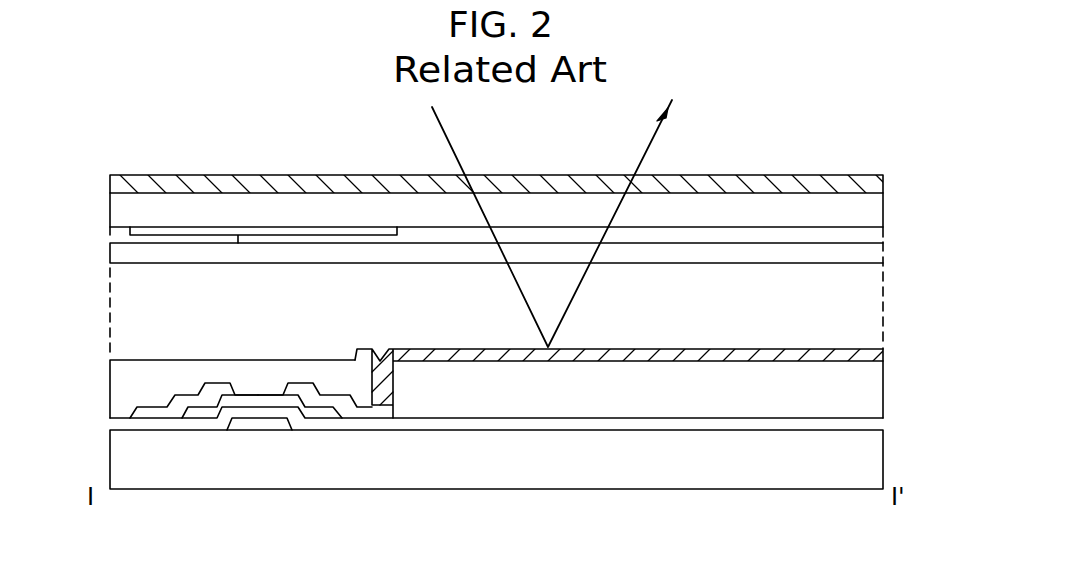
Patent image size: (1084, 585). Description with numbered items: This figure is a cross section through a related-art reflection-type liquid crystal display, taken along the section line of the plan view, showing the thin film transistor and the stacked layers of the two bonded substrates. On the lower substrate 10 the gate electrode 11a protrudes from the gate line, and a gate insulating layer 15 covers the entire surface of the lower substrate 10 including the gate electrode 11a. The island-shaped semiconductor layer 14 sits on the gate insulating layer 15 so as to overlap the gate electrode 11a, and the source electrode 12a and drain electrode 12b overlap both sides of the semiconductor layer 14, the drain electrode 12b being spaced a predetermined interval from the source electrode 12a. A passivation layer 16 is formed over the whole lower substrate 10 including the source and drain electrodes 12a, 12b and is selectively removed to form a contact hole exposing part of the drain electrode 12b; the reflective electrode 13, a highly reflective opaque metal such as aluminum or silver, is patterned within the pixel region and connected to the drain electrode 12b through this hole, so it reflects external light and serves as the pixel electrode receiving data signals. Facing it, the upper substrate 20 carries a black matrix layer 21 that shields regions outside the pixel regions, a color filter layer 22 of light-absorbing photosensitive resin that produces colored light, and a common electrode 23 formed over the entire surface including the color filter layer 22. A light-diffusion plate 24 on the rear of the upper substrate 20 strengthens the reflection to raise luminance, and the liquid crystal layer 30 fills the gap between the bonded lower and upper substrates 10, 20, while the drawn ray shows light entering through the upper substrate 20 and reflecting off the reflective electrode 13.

The lower substrate 10 is at (883, 462).
The gate electrode 11a is at (256, 422).
The source electrode 12a is at (153, 410).
The drain electrode 12b is at (345, 408).
The reflective electrode 13 is at (880, 350).
The semiconductor layer 14 is at (258, 397).
The gate insulating layer 15 is at (195, 422).
The passivation layer 16 is at (883, 390).
The upper substrate 20 is at (883, 207).
The black matrix layer 21 is at (147, 230).
The color filter layer 22 is at (884, 236).
The common electrode 23 is at (117, 253).
The light-diffusion plate 24 is at (118, 181).
The liquid crystal layer 30 is at (883, 294).